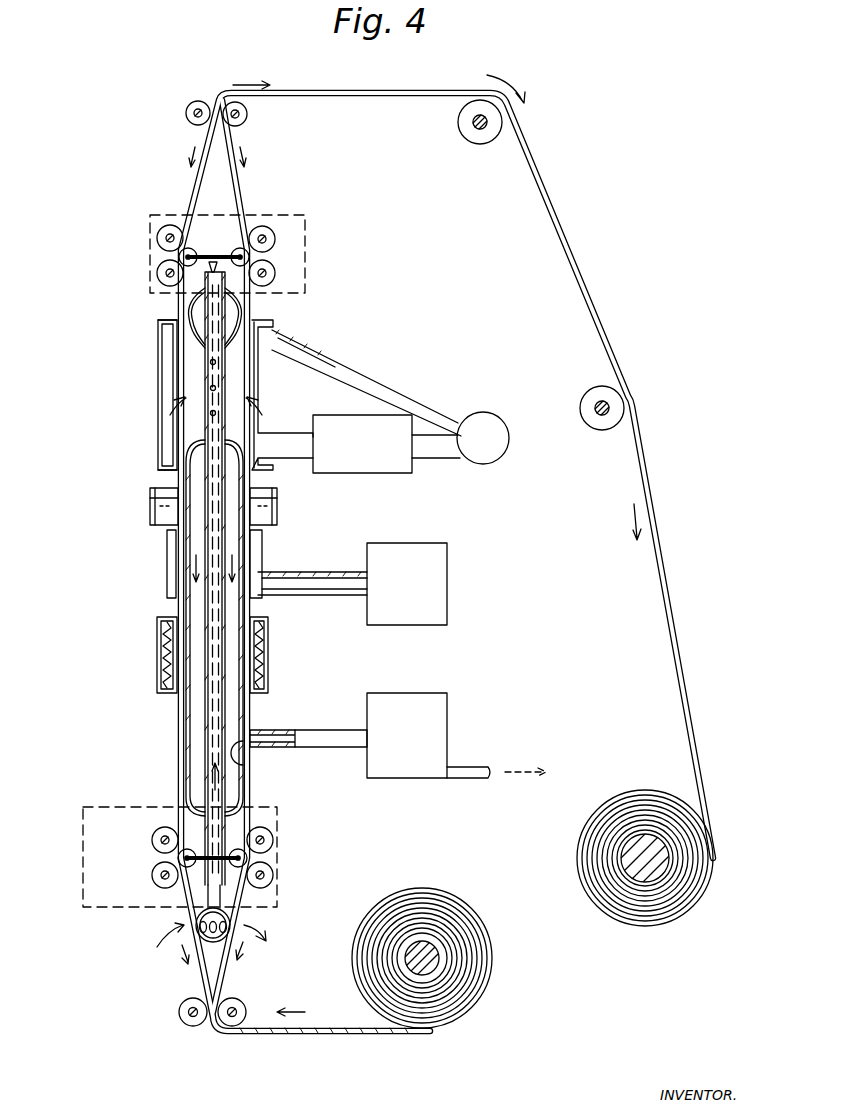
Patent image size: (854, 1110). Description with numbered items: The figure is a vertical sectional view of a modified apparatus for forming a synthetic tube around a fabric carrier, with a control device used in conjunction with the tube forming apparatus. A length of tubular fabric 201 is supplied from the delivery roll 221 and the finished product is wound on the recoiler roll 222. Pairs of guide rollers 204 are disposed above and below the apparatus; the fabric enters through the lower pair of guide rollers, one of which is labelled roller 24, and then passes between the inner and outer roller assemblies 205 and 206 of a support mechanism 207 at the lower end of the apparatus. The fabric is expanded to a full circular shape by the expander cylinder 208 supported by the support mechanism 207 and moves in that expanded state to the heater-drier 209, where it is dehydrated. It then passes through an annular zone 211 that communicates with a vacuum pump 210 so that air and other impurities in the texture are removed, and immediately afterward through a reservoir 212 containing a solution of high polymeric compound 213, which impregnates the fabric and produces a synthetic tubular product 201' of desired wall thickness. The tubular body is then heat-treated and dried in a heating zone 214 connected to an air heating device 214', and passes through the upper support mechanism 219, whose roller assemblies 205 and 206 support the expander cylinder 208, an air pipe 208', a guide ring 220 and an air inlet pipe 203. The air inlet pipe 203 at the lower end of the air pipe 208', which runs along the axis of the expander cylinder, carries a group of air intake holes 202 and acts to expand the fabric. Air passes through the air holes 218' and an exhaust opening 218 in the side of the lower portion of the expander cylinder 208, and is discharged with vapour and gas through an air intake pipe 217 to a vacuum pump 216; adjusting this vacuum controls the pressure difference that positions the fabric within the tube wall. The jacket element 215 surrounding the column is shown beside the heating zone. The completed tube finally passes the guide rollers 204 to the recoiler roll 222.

The roller 24 is at (246, 1006).
The tubular fabric 201 is at (447, 579).
The synthetic tubular product 201' is at (439, 337).
The air intake holes 202 is at (231, 918).
The air inlet pipe 203 is at (195, 912).
The guide rollers 204 is at (186, 113).
The inner roller assembly 205 is at (160, 230).
The outer roller assembly 206 is at (180, 258).
The support mechanism 207 is at (308, 286).
The expander cylinder 208 is at (174, 628).
The air pipe 208' is at (272, 578).
The heater-drier 209 is at (162, 664).
The vacuum pump 210 is at (447, 585).
The annular zone 211 is at (168, 562).
The reservoir 212 is at (160, 490).
The solution of high polymeric compound 213 is at (152, 508).
The heating zone 214 is at (140, 395).
The air heating device 214' is at (411, 458).
The jacket 215 is at (166, 362).
The vacuum pump 216 is at (207, 390).
The air intake pipe 217 is at (340, 730).
The exhaust opening 218 is at (272, 760).
The air holes 218' is at (157, 438).
The upper support mechanism 219 is at (272, 262).
The guide ring 220 is at (240, 325).
The delivery roll 221 is at (437, 960).
The recoiler roll 222 is at (648, 870).